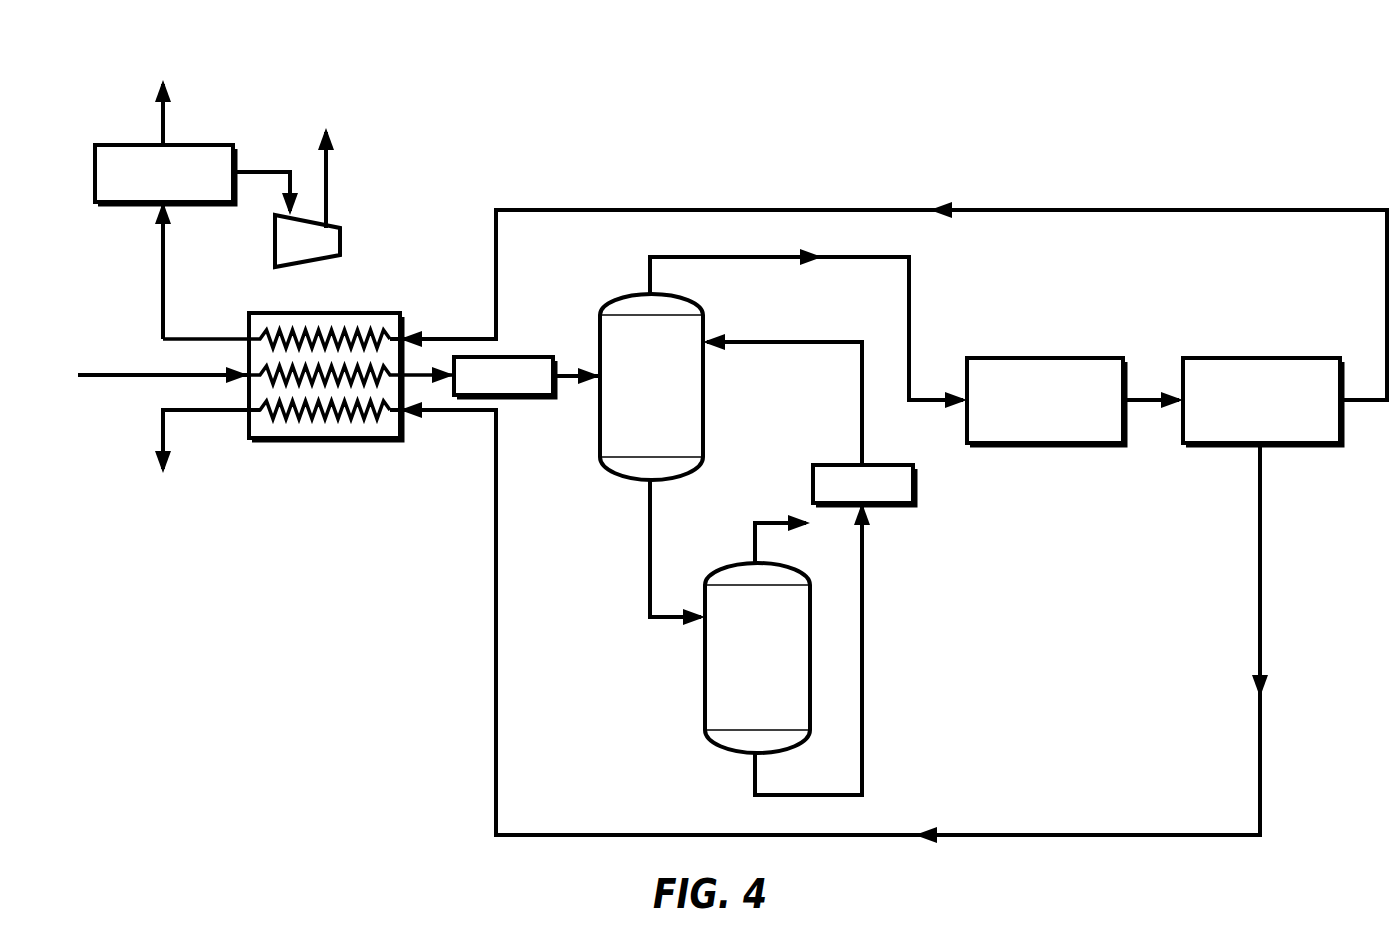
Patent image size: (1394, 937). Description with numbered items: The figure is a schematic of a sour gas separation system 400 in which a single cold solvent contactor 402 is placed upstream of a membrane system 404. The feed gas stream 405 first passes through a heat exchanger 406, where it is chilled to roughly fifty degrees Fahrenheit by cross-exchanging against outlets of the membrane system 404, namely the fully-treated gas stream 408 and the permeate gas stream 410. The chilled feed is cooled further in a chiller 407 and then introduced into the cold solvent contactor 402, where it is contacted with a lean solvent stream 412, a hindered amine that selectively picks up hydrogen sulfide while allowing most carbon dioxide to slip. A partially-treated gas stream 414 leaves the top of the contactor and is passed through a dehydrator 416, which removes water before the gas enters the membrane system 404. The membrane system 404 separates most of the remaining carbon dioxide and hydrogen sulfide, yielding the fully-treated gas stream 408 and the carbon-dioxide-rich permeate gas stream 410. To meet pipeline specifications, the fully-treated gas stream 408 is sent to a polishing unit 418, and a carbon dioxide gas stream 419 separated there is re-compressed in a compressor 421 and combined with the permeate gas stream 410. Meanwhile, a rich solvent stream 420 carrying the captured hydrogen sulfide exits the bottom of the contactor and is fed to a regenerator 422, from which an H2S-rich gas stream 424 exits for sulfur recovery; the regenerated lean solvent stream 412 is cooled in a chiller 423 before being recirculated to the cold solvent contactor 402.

The sour gas separation system 400 is at (93, 57).
The cold solvent contactor 402 is at (600, 412).
The membrane system 404 is at (1290, 356).
The feed gas stream 405 is at (130, 378).
The heat exchanger 406 is at (350, 312).
The chiller 407 is at (522, 357).
The fully-treated gas stream 408 is at (1115, 208).
The permeate gas stream 410 is at (1020, 833).
The lean solvent stream 412 is at (768, 340).
The partially-treated gas stream 414 is at (768, 253).
The dehydrator 416 is at (1075, 356).
The polishing unit 418 is at (126, 143).
The carbon dioxide gas stream 419 is at (264, 170).
The rich solvent stream 420 is at (650, 540).
The compressor 421 is at (364, 224).
The regenerator 422 is at (705, 686).
The chiller 423 is at (888, 463).
The H2S-rich gas stream 424 is at (755, 540).